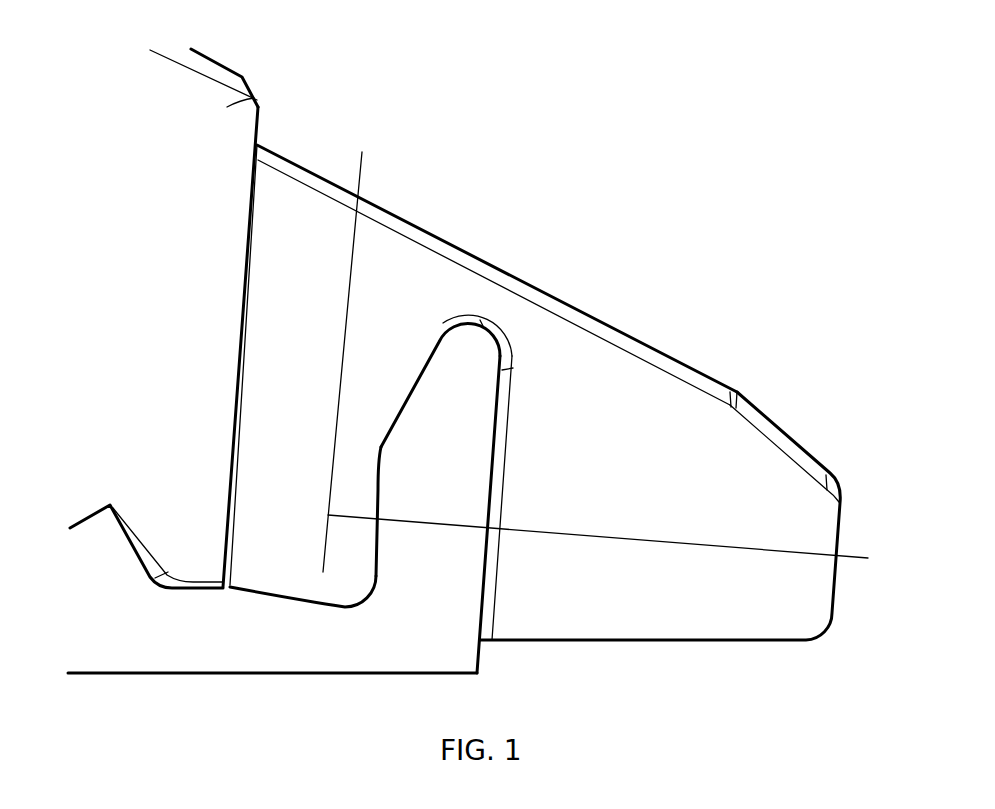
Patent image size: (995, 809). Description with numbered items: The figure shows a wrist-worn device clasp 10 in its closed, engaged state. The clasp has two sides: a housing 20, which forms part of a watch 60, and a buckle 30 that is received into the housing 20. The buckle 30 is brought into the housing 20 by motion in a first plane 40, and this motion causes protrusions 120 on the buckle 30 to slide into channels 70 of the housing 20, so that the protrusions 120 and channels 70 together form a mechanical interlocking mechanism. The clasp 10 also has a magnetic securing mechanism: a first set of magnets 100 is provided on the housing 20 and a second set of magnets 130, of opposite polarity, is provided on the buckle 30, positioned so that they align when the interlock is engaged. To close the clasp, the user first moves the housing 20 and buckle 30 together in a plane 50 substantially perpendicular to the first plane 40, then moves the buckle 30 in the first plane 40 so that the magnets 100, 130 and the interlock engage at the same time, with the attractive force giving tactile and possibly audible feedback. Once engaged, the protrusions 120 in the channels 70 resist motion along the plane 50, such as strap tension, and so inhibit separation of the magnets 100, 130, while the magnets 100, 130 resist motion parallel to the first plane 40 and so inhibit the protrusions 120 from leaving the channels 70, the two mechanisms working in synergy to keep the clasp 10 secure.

The wrist-worn device clasp 10 is at (823, 395).
The housing 20 is at (470, 337).
The buckle 30 is at (598, 355).
The first plane 40 is at (360, 183).
The plane 50 is at (762, 550).
The watch 60 is at (257, 97).
The channels 70 is at (343, 608).
The first set of magnets 100 is at (495, 480).
The protrusions 120 is at (332, 565).
The second set of magnets 130 is at (507, 493).